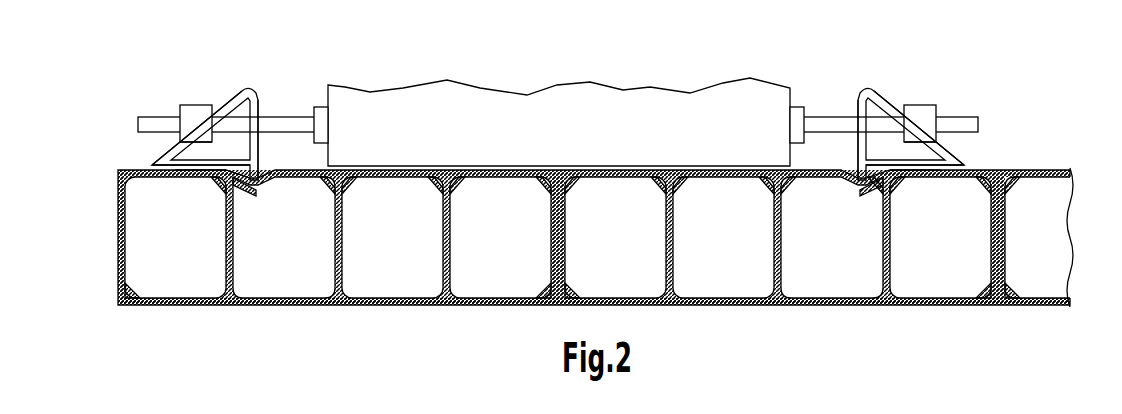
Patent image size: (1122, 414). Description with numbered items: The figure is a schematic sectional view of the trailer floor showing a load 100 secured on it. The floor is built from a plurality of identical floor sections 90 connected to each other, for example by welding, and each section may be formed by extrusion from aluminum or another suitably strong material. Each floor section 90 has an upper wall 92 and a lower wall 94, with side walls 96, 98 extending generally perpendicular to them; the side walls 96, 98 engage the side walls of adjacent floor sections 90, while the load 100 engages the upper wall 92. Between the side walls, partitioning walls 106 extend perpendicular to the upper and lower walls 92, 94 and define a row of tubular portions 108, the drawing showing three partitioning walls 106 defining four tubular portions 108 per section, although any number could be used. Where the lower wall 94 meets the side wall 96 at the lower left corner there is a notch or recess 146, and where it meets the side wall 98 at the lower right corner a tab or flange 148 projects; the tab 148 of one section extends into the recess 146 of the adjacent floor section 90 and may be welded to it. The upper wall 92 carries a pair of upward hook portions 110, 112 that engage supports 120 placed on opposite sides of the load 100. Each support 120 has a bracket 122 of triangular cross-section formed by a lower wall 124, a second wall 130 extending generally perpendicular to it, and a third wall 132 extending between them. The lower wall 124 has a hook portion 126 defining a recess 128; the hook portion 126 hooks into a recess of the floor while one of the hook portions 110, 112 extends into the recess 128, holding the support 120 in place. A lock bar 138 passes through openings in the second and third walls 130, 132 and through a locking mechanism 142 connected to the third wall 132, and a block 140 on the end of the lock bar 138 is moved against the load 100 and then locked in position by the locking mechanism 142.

The floor section 90 is at (326, 311).
The upper wall 92 is at (310, 169).
The lower wall 94 is at (813, 306).
The side wall 96 is at (117, 230).
The side wall 98 is at (551, 247).
The load 100 is at (631, 113).
The partitioning wall 106 is at (227, 240).
The tubular portion 108 is at (165, 304).
The hook portion 110 is at (225, 179).
The hook portion 112 is at (456, 183).
The support 120 is at (244, 88).
The bracket 122 is at (218, 110).
The lower wall 124 is at (190, 177).
The hook portion 126 is at (236, 177).
The recess 128 is at (175, 162).
The second wall 130 is at (258, 110).
The third wall 132 is at (187, 146).
The lock bar 138 is at (294, 122).
The block 140 is at (326, 118).
The locking mechanism 142 is at (196, 114).
The recess 146 is at (123, 304).
The tab 148 is at (563, 306).